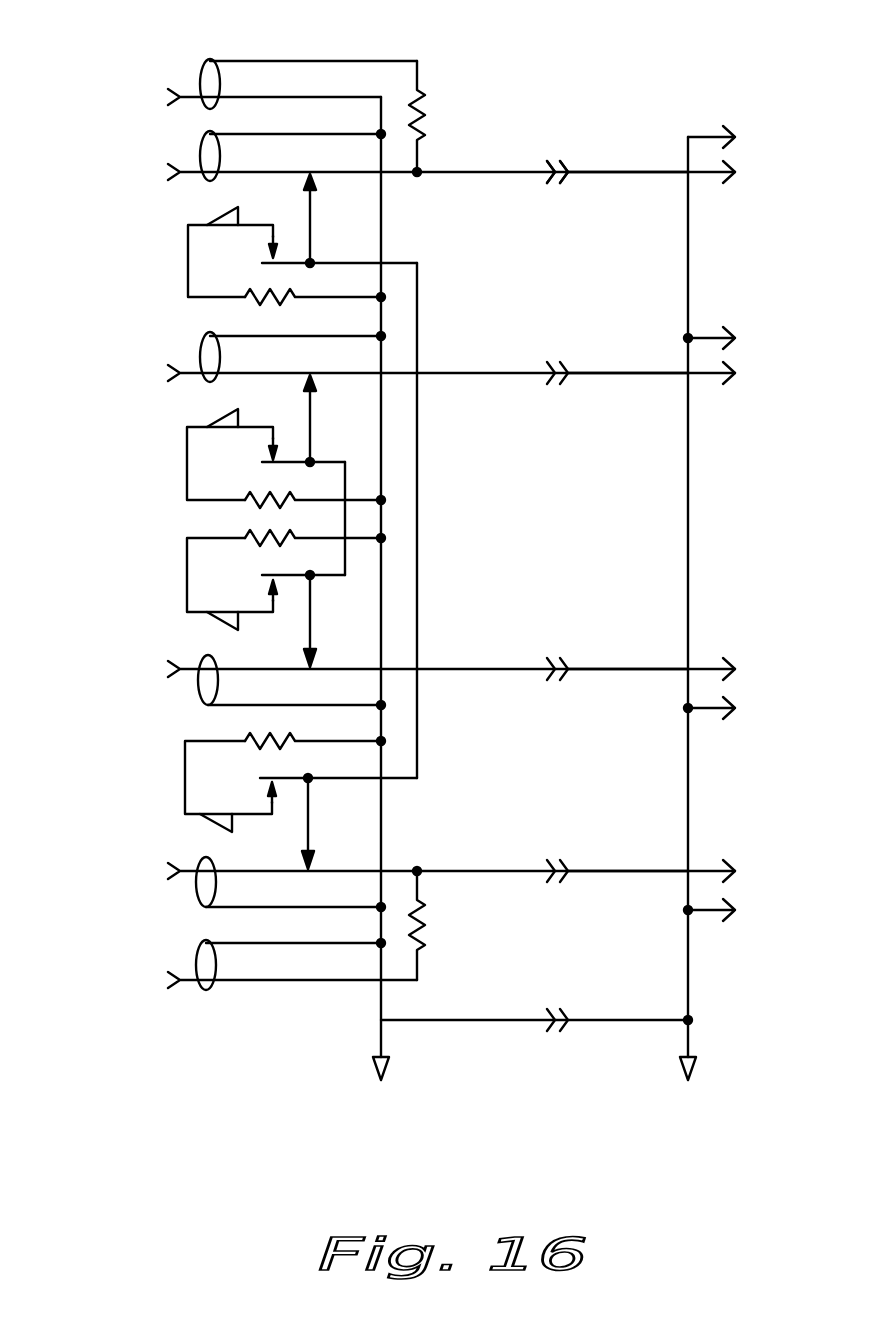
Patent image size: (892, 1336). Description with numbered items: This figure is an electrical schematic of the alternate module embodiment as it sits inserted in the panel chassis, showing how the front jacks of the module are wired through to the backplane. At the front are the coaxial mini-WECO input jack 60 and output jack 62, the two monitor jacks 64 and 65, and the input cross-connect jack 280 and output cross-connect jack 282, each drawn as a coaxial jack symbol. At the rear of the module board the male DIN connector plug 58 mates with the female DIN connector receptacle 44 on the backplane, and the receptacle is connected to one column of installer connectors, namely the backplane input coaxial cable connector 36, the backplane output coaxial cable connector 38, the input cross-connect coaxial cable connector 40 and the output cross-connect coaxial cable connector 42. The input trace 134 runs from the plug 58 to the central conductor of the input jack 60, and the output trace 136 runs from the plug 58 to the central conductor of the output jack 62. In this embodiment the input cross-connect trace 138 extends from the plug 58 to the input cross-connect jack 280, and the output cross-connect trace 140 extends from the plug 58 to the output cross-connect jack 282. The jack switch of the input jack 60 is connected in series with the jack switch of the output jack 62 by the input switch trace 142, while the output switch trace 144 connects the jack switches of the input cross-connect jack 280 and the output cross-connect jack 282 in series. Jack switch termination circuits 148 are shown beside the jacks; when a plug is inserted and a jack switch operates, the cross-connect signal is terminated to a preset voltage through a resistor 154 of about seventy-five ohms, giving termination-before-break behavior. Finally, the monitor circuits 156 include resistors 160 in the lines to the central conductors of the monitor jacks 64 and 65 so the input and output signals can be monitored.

The monitor circuit 156 is at (335, 61).
The resistor 160 is at (425, 122).
The monitor jack 64 is at (192, 96).
The input jack 60 is at (191, 178).
The input cross-connect jack 280 is at (192, 372).
The output cross-connect jack 282 is at (186, 676).
The output jack 62 is at (186, 867).
The monitor jack 65 is at (186, 984).
The resistor 154 is at (231, 519).
The jack switch termination circuit 148 is at (187, 264).
The output switch printed circuit trace 144 is at (341, 460).
The input switch printed circuit trace 142 is at (418, 330).
The printed circuit board connector plug 58 is at (547, 181).
The printed circuit board connector receptacle 44 is at (561, 165).
The input printed circuit trace 134 is at (630, 176).
The input cross-connect printed circuit trace 138 is at (485, 376).
The output cross-connect printed circuit trace 140 is at (630, 672).
The output printed circuit trace 136 is at (488, 870).
The backplane input coaxial cable connector 36 is at (731, 181).
The backplane output coaxial cable connector 38 is at (731, 371).
The output cross-connect coaxial cable connector 42 is at (731, 677).
The input cross-connect coaxial cable connector 40 is at (731, 867).